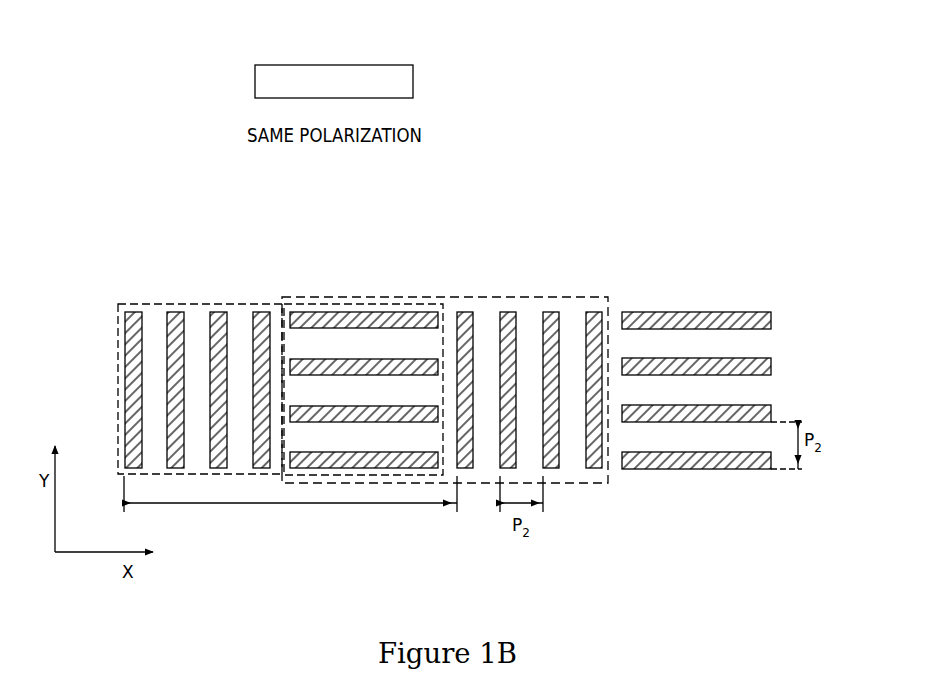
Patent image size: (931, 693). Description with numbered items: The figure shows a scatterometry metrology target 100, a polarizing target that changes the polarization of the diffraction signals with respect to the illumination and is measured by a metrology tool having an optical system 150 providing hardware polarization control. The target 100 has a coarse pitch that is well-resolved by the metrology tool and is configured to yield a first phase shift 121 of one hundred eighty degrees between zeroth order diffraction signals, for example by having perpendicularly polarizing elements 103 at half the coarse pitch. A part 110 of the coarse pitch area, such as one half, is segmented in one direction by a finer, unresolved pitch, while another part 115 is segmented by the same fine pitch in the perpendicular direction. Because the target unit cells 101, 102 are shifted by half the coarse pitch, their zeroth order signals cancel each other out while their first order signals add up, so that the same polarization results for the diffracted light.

The scatterometry metrology target 100 is at (52, 283).
The target unit cell 101 is at (196, 304).
The target unit cell 102 is at (493, 297).
The perpendicularly polarizing elements 103 is at (728, 310).
The part of the coarse pitch area 110 is at (198, 440).
The part of the coarse pitch area 115 is at (383, 440).
The first phase shift 121 is at (425, 136).
The optical system 150 is at (303, 65).